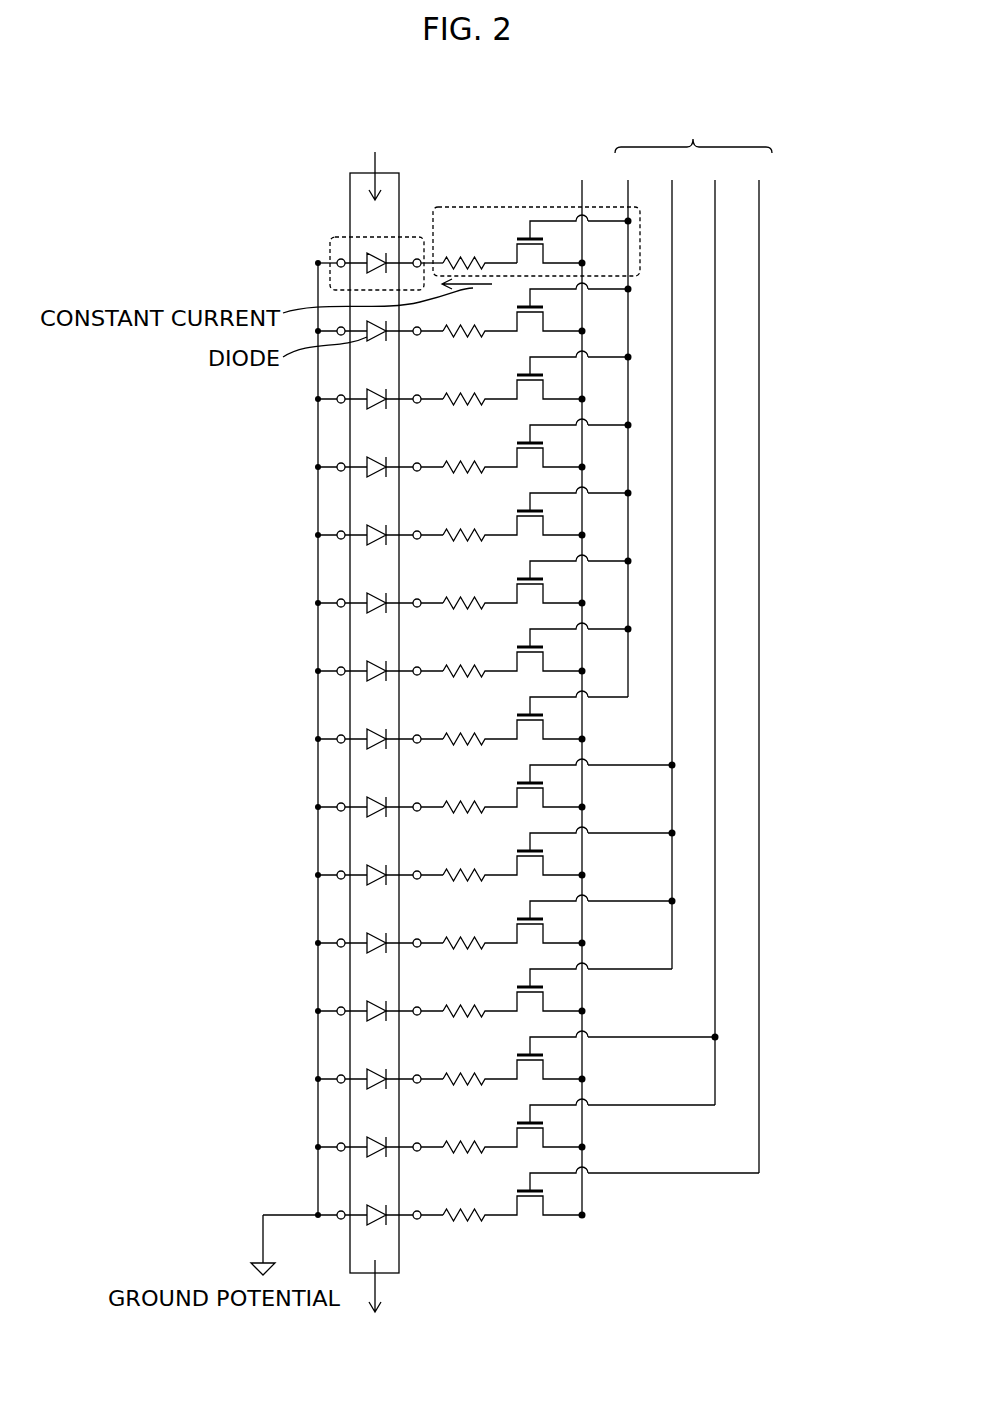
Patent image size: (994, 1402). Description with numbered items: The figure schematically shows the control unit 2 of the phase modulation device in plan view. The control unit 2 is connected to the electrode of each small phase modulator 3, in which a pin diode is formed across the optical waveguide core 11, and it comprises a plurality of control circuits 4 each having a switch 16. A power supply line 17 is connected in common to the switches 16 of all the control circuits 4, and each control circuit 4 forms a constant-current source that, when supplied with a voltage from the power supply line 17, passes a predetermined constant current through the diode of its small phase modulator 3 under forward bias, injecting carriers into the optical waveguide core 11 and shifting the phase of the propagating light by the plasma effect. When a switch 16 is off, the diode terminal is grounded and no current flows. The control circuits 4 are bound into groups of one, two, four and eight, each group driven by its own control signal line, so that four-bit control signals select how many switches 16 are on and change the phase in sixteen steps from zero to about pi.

The control unit 2 is at (582, 165).
The small phase modulator 3 is at (330, 263).
The control circuit 4 is at (619, 255).
The optical waveguide core 11 is at (365, 218).
The switch 16 is at (543, 252).
The power supply line 17 is at (582, 193).